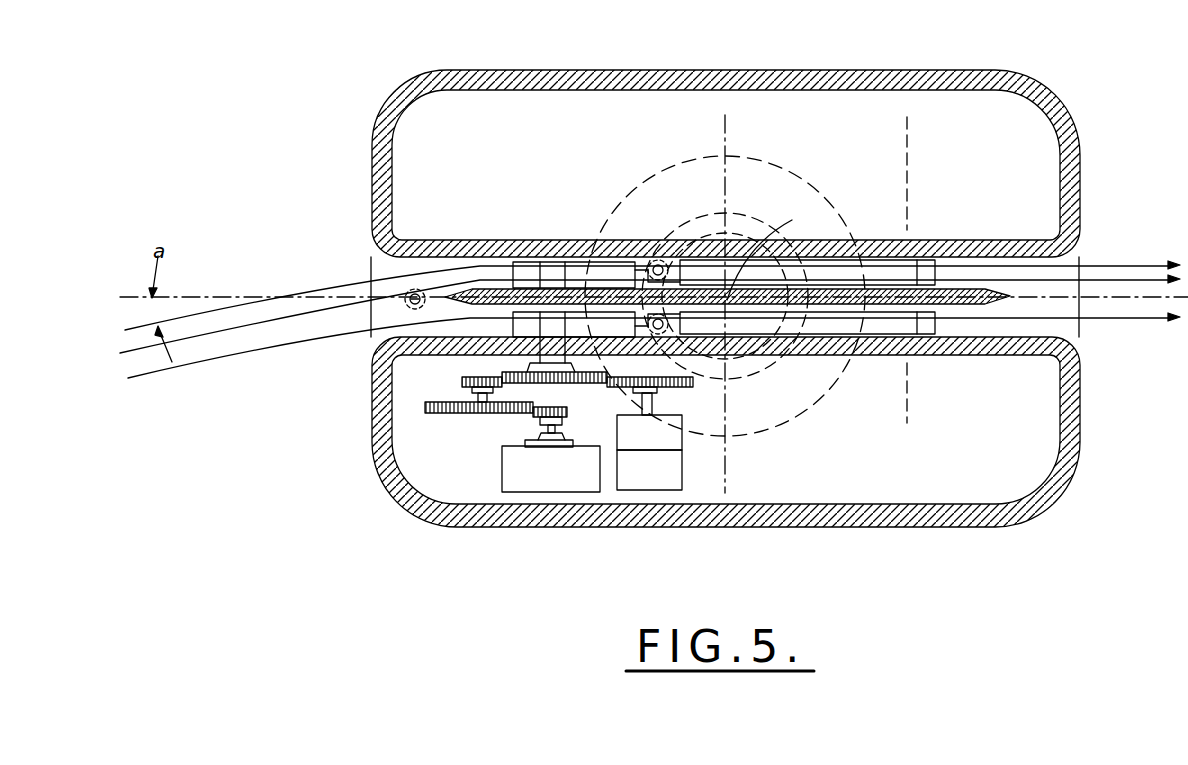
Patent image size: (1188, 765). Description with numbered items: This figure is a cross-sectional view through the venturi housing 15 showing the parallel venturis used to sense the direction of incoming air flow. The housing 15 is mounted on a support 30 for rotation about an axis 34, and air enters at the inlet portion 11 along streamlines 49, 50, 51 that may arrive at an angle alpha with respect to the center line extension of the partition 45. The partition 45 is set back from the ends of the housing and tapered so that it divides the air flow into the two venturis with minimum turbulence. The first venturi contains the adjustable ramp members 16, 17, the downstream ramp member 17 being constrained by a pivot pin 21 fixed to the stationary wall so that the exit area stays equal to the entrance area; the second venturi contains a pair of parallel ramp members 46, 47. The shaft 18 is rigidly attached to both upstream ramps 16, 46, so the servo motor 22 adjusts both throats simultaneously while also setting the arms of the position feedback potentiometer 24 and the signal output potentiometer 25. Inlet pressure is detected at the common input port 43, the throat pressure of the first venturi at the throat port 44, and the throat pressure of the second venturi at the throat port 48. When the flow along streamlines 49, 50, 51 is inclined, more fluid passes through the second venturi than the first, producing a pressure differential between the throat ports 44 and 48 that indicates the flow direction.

The inlet portion 11 is at (372, 262).
The venturi housing 15 is at (722, 70).
The upstream ramp member 16 is at (517, 327).
The downstream ramp member 17 is at (850, 334).
The shaft 18 is at (568, 384).
The pivot pin 21 is at (908, 390).
The servo motor 22 is at (567, 474).
The position feedback potentiometer 24 is at (664, 444).
The signal output potentiometer 25 is at (664, 476).
The support 30 is at (795, 158).
The axis 34 is at (778, 229).
The common input port 43 is at (418, 289).
The throat port 44 is at (714, 382).
The partition 45 is at (473, 277).
The upstream ramp member 46 is at (527, 262).
The downstream ramp member 47 is at (889, 262).
The throat port 48 is at (655, 250).
The streamline 49 is at (243, 353).
The streamline 50 is at (305, 312).
The streamline 51 is at (300, 292).